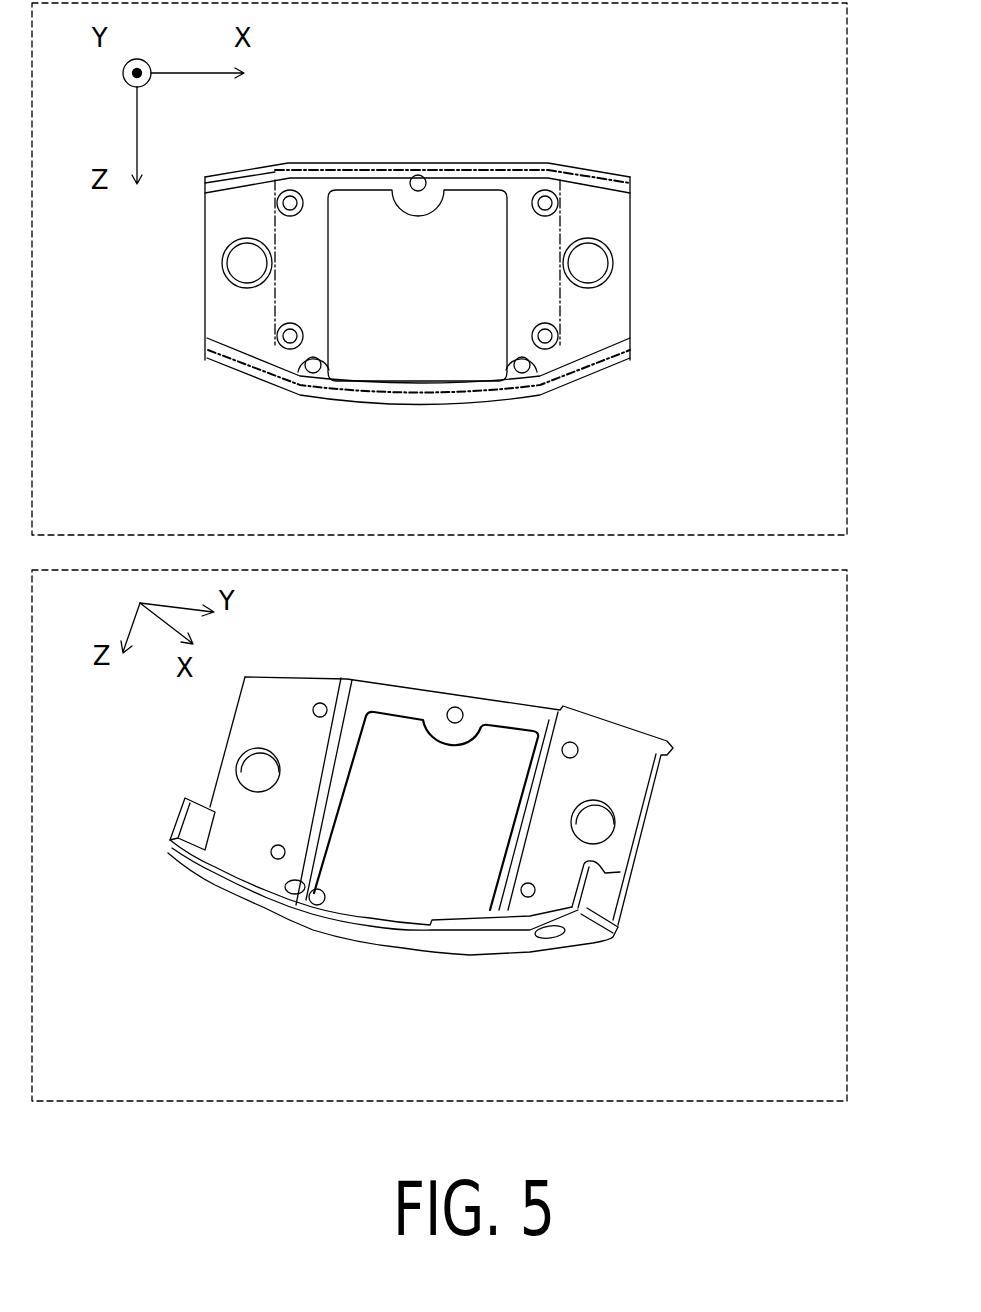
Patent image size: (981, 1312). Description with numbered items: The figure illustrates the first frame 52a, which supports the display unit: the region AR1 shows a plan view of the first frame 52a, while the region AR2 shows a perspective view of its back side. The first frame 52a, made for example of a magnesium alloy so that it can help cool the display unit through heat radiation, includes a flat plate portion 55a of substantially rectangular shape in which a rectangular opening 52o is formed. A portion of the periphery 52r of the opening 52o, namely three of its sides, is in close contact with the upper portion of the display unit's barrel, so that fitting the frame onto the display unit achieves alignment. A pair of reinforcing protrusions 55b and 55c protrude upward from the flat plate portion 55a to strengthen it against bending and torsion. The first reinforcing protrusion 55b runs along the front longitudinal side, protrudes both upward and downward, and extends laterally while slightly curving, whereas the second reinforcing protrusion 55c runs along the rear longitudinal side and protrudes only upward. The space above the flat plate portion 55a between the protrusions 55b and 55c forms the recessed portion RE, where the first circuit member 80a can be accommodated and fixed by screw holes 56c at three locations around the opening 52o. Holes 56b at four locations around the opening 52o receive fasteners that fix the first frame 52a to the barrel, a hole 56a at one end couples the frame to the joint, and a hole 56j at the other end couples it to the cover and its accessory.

The first frame 52a is at (552, 148).
The periphery of the rectangular opening 52r is at (396, 180).
The rectangular opening 52o is at (347, 190).
The flat plate portion 55a is at (605, 217).
The first reinforcing protrusion 55b is at (475, 395).
The second reinforcing protrusion 55c is at (470, 170).
The hole 56a is at (598, 263).
The holes 56b is at (290, 203).
The screw holes 56c is at (420, 182).
The hole 56j is at (237, 263).
The first circuit member 80a is at (560, 322).
The recessed portion RE is at (560, 218).
The region AR1 is at (850, 76).
The region AR2 is at (850, 641).